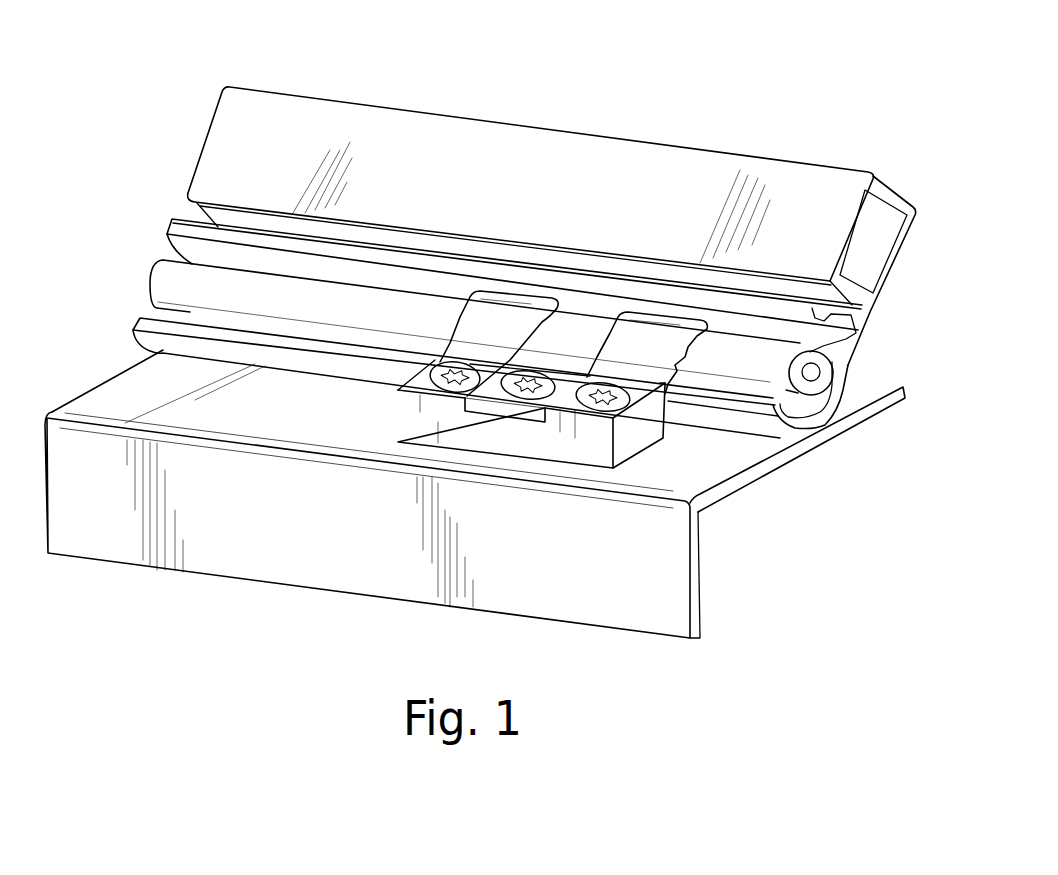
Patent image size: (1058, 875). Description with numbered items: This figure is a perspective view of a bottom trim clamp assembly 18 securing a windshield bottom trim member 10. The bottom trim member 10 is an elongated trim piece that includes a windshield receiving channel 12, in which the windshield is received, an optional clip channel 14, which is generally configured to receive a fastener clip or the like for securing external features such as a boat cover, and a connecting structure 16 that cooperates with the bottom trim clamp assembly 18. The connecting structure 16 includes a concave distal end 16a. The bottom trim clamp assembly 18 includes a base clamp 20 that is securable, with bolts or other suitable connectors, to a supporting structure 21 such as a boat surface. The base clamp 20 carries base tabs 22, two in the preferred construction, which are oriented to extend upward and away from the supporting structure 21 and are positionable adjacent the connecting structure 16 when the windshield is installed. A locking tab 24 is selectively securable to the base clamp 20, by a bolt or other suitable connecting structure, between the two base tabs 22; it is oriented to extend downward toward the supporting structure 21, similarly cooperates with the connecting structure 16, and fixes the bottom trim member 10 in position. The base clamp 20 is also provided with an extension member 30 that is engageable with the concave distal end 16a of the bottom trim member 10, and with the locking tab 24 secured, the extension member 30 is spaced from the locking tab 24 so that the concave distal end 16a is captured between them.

The bottom trim member 10 is at (873, 125).
The windshield receiving channel 12 is at (887, 223).
The clip channel 14 is at (840, 318).
The connecting structure 16 is at (890, 438).
The concave distal end 16a is at (827, 413).
The bottom trim clamp assembly 18 is at (368, 410).
The base clamp 20 is at (588, 443).
The supporting structure 21 is at (130, 392).
The base tabs 22 is at (657, 330).
The locking tab 24 is at (508, 410).
The extension member 30 is at (676, 427).